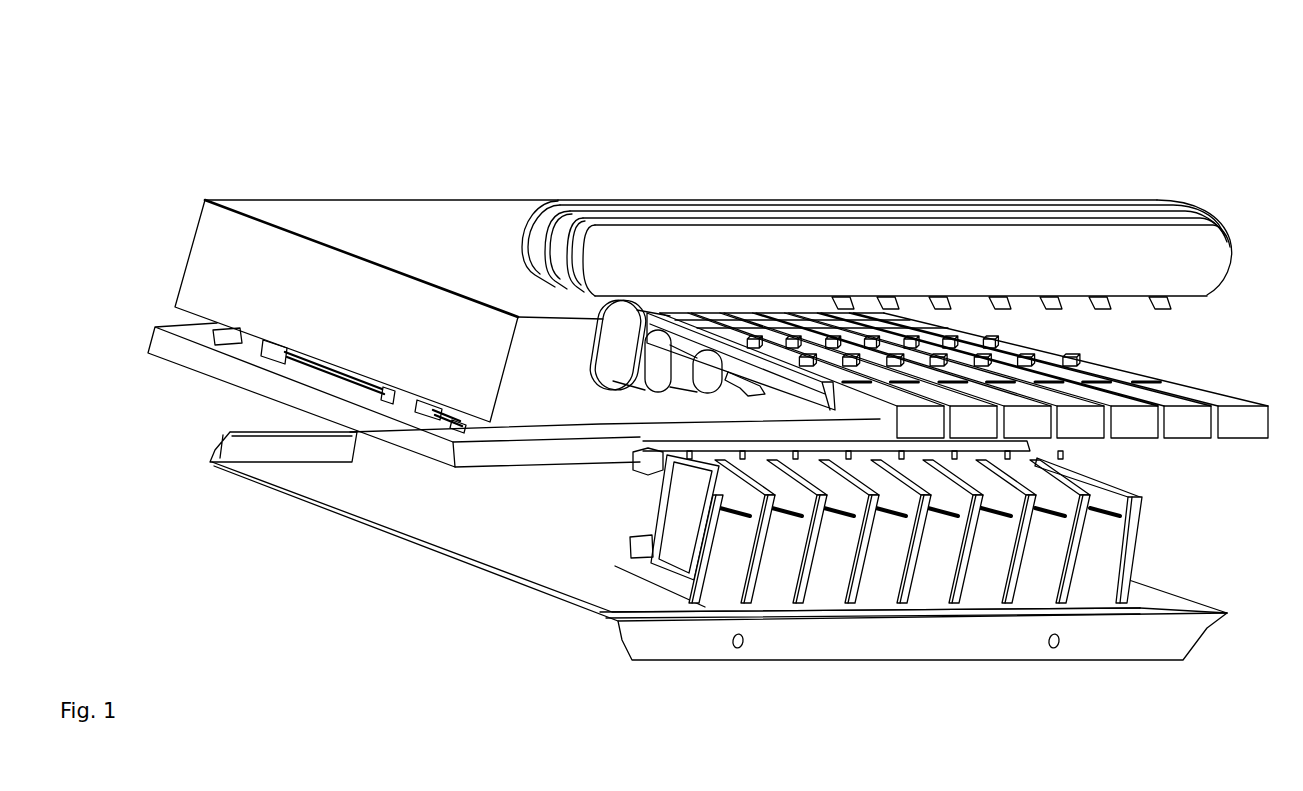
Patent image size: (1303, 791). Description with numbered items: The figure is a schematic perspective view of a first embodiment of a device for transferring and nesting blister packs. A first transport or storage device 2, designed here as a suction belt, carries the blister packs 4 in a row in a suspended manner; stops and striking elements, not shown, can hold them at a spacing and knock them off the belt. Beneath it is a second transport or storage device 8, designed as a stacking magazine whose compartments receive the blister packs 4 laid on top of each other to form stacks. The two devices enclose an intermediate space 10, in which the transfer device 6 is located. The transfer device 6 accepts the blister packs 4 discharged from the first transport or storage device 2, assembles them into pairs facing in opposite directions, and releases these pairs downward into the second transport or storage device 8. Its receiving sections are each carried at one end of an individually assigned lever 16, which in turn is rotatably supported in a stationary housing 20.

The first transport or storage device 2 is at (738, 253).
The blister packs 4 is at (1157, 296).
The transfer device 6 is at (687, 340).
The second transport or storage device 8 is at (678, 527).
The intermediate space 10 is at (600, 393).
The lever 16 is at (627, 358).
The stationary housing 20 is at (282, 267).